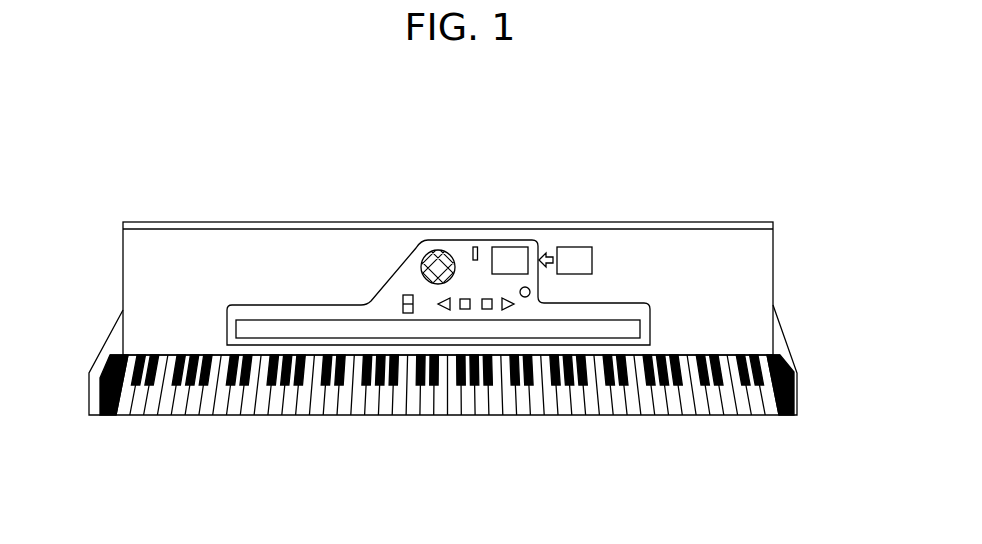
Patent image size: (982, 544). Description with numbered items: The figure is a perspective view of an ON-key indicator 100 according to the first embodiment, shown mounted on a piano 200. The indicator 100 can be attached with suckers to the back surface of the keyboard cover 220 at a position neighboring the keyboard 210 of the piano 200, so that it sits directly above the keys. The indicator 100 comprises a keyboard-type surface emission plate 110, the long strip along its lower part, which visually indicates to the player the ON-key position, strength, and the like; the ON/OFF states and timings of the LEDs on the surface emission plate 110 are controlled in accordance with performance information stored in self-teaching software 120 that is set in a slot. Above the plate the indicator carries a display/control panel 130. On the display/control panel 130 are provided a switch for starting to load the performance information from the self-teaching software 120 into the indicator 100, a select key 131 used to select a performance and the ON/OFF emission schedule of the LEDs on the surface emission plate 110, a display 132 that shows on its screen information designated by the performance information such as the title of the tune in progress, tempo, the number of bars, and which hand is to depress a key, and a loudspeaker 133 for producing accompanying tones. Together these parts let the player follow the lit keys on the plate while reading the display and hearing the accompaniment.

The ON-key indicator 100 is at (471, 250).
The keyboard-type surface emission plate 110 is at (633, 328).
The self-teaching software 120 is at (577, 247).
The display/control panel 130 is at (476, 247).
The select key 131 is at (407, 295).
The display 132 is at (513, 247).
The loudspeaker 133 is at (440, 250).
The piano 200 is at (464, 354).
The keyboard 210 is at (89, 427).
The keyboard cover 220 is at (758, 258).